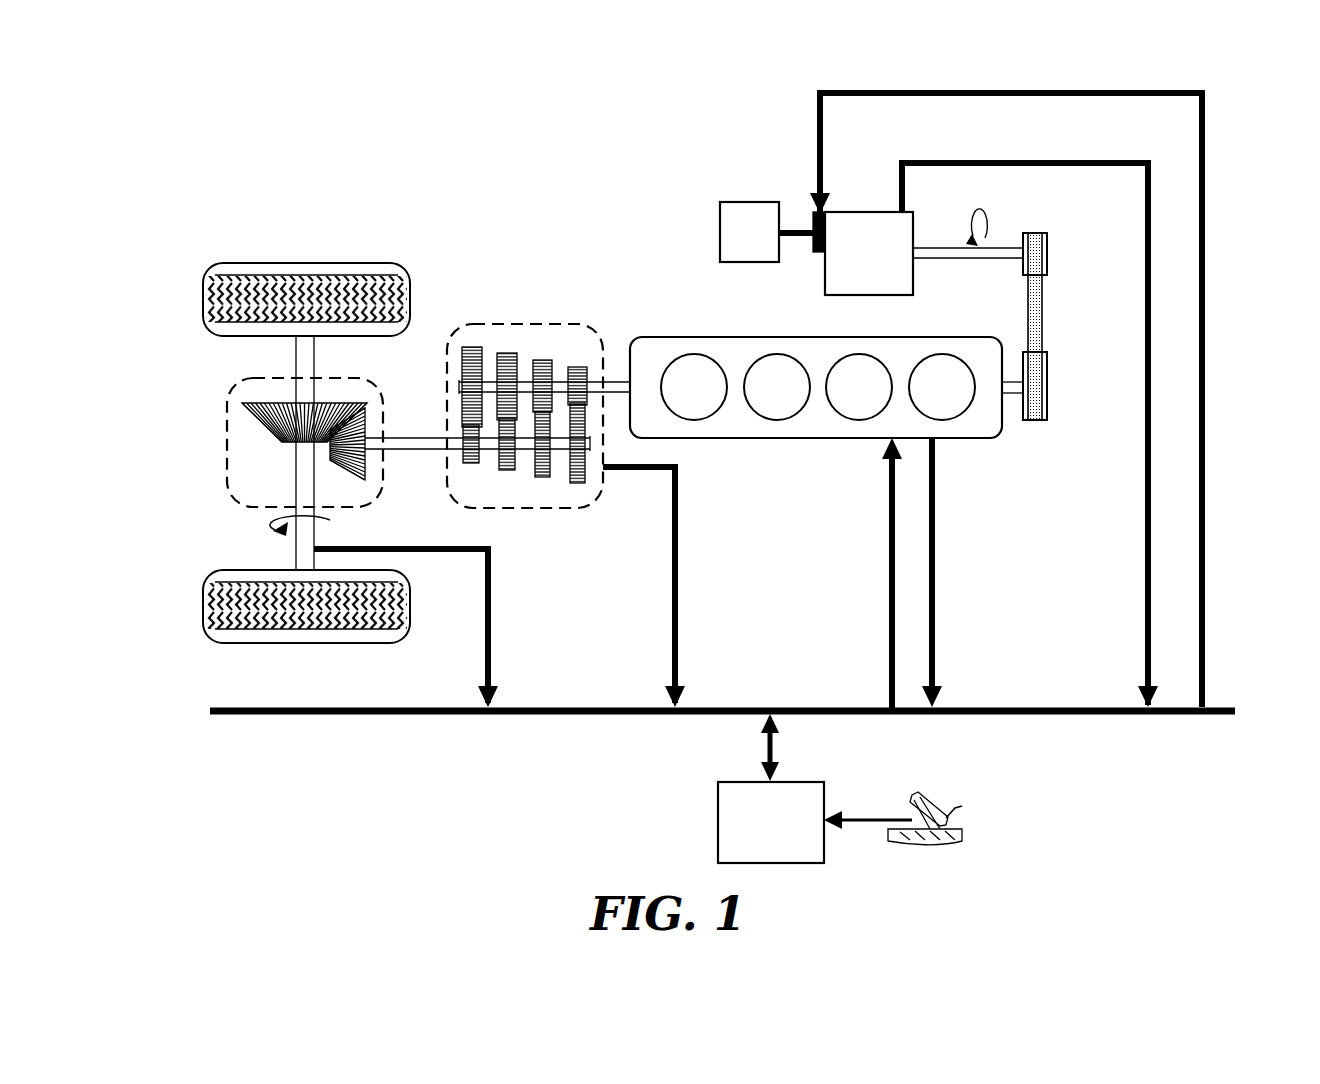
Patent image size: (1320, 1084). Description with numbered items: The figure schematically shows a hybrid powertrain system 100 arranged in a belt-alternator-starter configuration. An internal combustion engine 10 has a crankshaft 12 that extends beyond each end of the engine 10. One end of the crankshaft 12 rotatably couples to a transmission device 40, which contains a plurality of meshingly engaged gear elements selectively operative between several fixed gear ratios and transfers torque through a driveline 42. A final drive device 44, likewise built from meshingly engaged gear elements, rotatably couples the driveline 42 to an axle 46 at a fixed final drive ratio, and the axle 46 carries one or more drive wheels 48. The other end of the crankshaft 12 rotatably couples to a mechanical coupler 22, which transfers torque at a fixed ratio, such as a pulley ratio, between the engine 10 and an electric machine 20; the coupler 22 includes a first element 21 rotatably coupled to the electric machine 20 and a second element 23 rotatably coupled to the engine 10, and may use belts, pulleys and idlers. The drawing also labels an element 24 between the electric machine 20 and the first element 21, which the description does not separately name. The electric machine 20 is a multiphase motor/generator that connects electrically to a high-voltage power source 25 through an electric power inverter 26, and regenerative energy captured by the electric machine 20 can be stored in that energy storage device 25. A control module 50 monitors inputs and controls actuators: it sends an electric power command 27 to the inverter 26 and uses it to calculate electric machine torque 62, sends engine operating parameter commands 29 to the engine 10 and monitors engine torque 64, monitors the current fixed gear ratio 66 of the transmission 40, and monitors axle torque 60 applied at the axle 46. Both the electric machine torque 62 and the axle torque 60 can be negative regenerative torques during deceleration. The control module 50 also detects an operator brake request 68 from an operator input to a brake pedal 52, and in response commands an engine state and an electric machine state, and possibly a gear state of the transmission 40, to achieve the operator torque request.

The hybrid powertrain system 100 is at (248, 190).
The drive wheels 48 is at (303, 263).
The axle 46 is at (314, 376).
The final drive device 44 is at (227, 453).
The driveline 42 is at (430, 452).
The transmission device 40 is at (530, 324).
The crankshaft 12 is at (610, 380).
The internal combustion engine 10 is at (690, 337).
The high-voltage power source 25 is at (749, 202).
The electric power inverter 26 is at (820, 252).
The electric machine 20 is at (853, 212).
The motor shaft 24 is at (1000, 250).
The first element 21 is at (1047, 252).
The mechanical coupler 22 is at (1042, 320).
The second element 23 is at (1047, 385).
The electric power command 27 is at (1205, 305).
The electric machine torque 62 is at (1030, 163).
The current fixed gear ratio 66 is at (678, 572).
The axle torque 60 is at (490, 617).
The engine operating parameter commands 29 is at (888, 565).
The engine torque 64 is at (935, 565).
The control module 50 is at (771, 788).
The operator brake request 68 is at (876, 820).
The brake pedal 52 is at (965, 812).